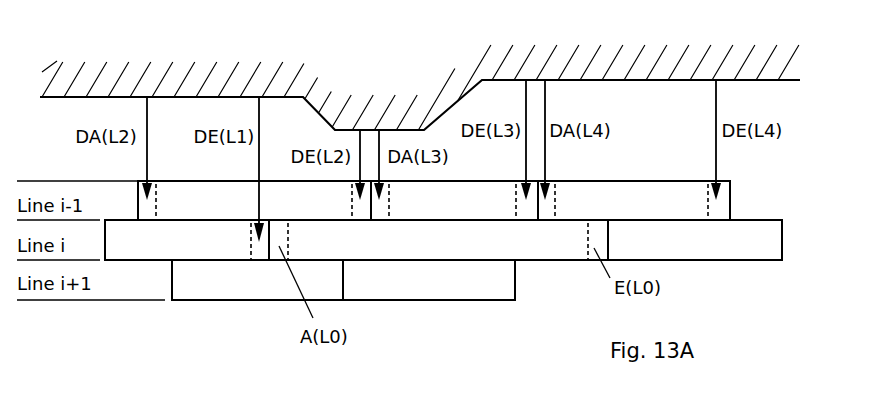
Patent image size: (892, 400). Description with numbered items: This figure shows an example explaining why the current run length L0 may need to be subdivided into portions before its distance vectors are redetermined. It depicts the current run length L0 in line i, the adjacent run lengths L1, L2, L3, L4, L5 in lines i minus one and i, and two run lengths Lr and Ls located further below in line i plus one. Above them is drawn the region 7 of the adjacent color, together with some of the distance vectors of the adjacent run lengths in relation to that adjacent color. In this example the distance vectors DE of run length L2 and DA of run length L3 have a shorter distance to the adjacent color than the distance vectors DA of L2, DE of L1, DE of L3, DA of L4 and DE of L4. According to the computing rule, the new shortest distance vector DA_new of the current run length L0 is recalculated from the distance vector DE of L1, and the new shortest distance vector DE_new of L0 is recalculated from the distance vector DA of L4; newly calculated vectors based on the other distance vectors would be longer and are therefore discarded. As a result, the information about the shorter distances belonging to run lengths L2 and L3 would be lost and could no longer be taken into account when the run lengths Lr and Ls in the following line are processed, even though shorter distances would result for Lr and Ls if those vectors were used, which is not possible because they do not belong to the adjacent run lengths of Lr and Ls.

The region of the adjacent color 7 is at (102, 84).
The current run length L0 is at (438, 240).
The adjacent run length L1 is at (187, 240).
The adjacent run length L2 is at (254, 200).
The adjacent run length L3 is at (454, 200).
The adjacent run length L4 is at (634, 200).
The adjacent run length L5 is at (695, 240).
The run length Lr is at (257, 280).
The run length Ls is at (429, 280).